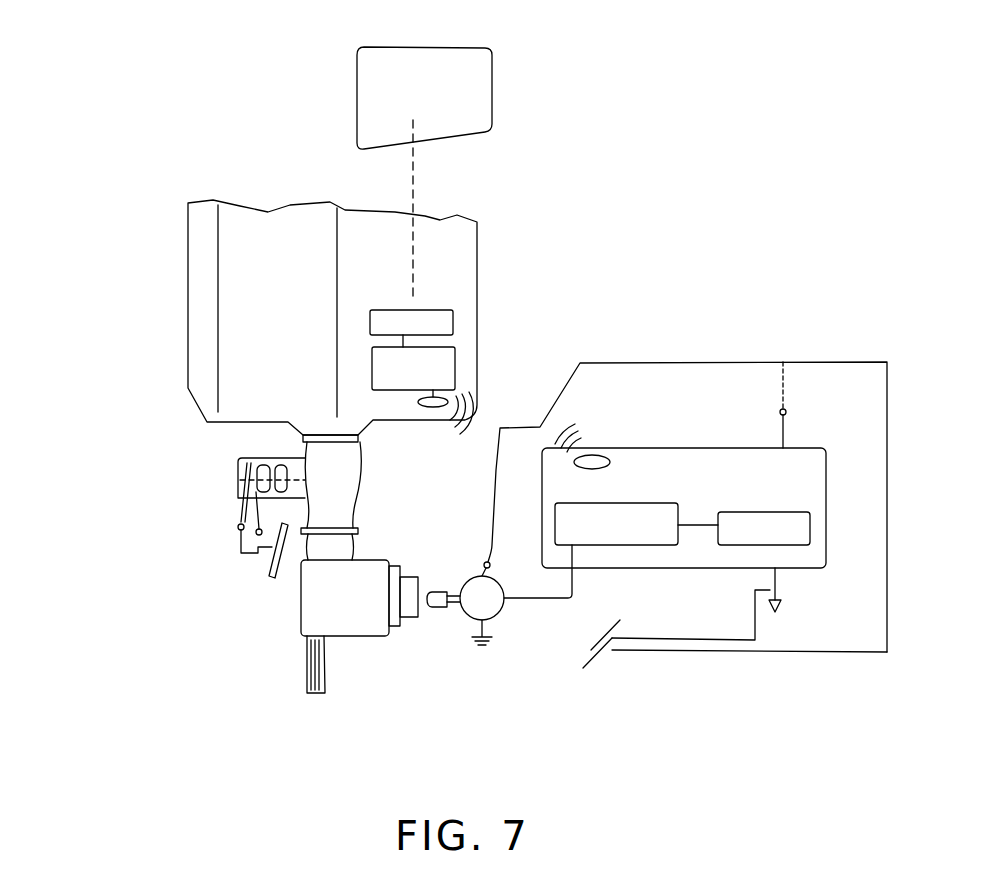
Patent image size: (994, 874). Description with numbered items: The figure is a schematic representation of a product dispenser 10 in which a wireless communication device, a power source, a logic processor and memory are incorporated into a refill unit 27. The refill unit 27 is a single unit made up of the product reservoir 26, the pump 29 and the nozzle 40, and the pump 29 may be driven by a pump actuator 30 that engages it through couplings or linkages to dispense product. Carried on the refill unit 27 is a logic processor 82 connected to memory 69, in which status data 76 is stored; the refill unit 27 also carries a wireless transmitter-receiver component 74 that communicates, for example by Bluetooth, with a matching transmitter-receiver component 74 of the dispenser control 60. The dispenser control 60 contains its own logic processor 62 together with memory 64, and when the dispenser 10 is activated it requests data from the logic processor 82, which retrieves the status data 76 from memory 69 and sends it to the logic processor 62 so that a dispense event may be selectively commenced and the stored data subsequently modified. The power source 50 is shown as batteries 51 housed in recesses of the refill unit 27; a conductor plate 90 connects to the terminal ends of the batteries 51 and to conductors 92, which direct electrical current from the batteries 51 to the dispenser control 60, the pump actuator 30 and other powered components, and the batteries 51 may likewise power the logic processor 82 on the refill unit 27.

The product dispenser 10 is at (641, 219).
The product reservoir 26 is at (238, 382).
The refill unit 27 is at (151, 364).
The pump 29 is at (308, 610).
The pump actuator 30 is at (473, 618).
The nozzle 40 is at (303, 668).
The power source 50 is at (201, 481).
The batteries 51 is at (267, 465).
The dispenser control 60 is at (703, 463).
The logic processor 62 is at (608, 515).
The memory 64 is at (735, 523).
The memory 69 is at (440, 320).
The wireless transmitter-receiver components 74 is at (455, 399).
The status data 76 is at (360, 67).
The logic processor 82 is at (440, 368).
The conductor plate 90 is at (240, 515).
The conductors 92 is at (242, 540).